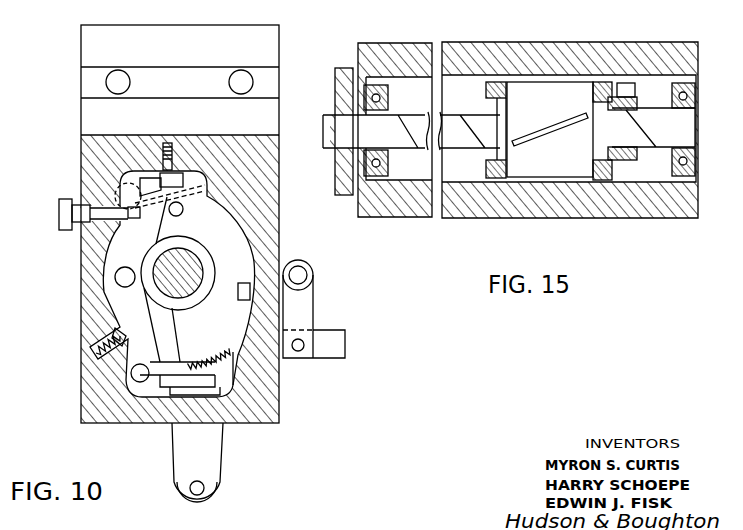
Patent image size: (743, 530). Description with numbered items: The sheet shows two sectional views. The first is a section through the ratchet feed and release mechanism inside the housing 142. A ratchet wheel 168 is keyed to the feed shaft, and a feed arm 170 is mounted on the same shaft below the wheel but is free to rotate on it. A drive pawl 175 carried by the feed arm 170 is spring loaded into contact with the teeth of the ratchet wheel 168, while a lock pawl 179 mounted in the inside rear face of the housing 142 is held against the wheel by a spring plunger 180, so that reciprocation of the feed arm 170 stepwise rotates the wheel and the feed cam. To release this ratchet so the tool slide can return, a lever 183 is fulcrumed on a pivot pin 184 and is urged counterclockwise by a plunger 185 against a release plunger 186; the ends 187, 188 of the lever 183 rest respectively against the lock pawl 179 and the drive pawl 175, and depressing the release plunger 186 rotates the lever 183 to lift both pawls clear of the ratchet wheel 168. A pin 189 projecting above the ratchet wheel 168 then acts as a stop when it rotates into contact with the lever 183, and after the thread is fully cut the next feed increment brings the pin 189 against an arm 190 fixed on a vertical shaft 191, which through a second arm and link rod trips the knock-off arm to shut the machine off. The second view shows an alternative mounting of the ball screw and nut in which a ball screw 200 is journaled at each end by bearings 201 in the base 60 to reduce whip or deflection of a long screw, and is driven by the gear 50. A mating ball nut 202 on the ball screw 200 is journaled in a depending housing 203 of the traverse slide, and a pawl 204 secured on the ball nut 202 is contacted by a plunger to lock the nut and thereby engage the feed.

In FIG. 10, the housing 142 is at (97, 394).
In FIG. 10, the ratchet wheel 168 is at (241, 254).
In FIG. 10, the feed arm 170 is at (207, 443).
In FIG. 10, the drive pawl 175 is at (229, 376).
In FIG. 10, the lock pawl 179 is at (180, 172).
In FIG. 10, the spring plunger 180 is at (163, 155).
In FIG. 10, the lever 183 is at (158, 329).
In FIG. 10, the pivot pin 184 is at (128, 288).
In FIG. 10, the plunger 185 is at (112, 330).
In FIG. 10, the release plunger 186 is at (69, 183).
In FIG. 10, the end of lever 187 is at (178, 216).
In FIG. 10, the end of lever 188 is at (166, 352).
In FIG. 10, the pin 189 is at (183, 211).
In FIG. 10, the arm 190 is at (240, 283).
In FIG. 10, the vertical shaft 191 is at (309, 276).
In FIG. 15, the gear 50 is at (345, 68).
In FIG. 15, the base 60 is at (528, 52).
In FIG. 15, the ball screw 200 is at (443, 115).
In FIG. 15, the bearings 201 is at (378, 98).
In FIG. 15, the ball nut 202 is at (566, 110).
In FIG. 15, the housing 203 is at (593, 167).
In FIG. 15, the pawl 204 is at (625, 85).